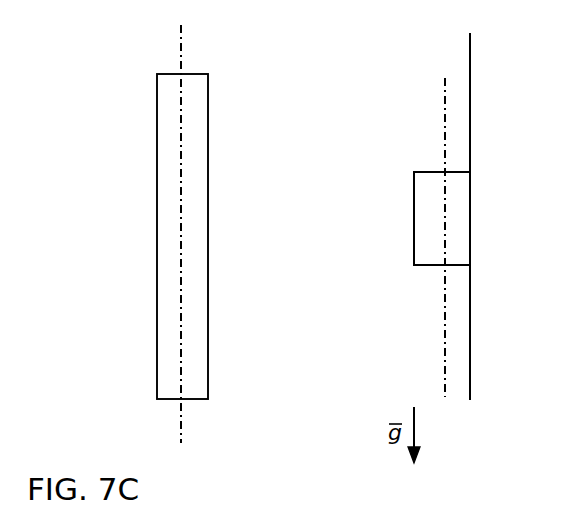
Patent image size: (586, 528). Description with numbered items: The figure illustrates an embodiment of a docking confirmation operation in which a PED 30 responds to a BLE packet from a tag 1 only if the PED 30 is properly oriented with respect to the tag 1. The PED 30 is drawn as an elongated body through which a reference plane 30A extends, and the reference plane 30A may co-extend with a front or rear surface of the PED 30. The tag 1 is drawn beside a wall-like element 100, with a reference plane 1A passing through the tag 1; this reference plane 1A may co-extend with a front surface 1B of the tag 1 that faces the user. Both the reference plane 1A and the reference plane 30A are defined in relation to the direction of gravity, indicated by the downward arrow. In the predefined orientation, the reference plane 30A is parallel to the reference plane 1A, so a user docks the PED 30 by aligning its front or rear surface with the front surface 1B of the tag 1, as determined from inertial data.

The PED 30 is at (157, 113).
The reference plane of the PED 30A is at (181, 40).
The tag 1 is at (425, 270).
The reference plane of the tag 1A is at (445, 120).
The front surface of the tag 1B is at (414, 215).
The substrate 100 is at (538, 226).